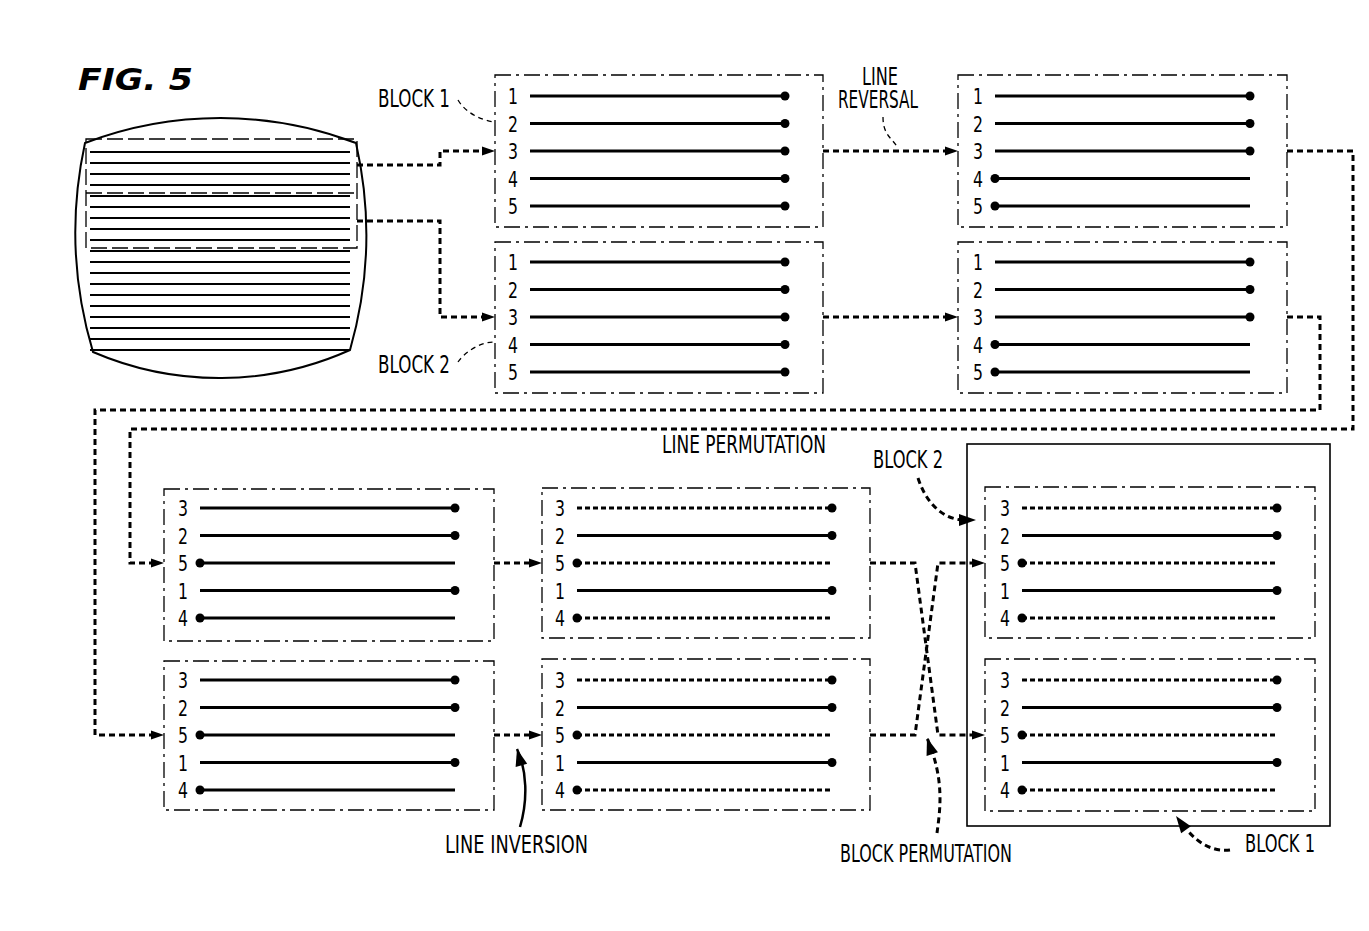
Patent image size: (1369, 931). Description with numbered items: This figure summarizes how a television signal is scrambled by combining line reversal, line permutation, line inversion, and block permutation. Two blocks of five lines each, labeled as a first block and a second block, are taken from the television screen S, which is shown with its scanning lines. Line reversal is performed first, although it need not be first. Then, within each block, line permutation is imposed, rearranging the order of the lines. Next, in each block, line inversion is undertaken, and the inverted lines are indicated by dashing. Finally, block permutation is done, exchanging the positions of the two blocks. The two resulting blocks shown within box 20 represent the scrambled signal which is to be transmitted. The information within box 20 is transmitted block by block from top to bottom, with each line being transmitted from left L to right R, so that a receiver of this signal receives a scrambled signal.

The television screen S is at (305, 130).
The box 20 is at (1148, 635).
The left L is at (1021, 624).
The right R is at (1276, 610).